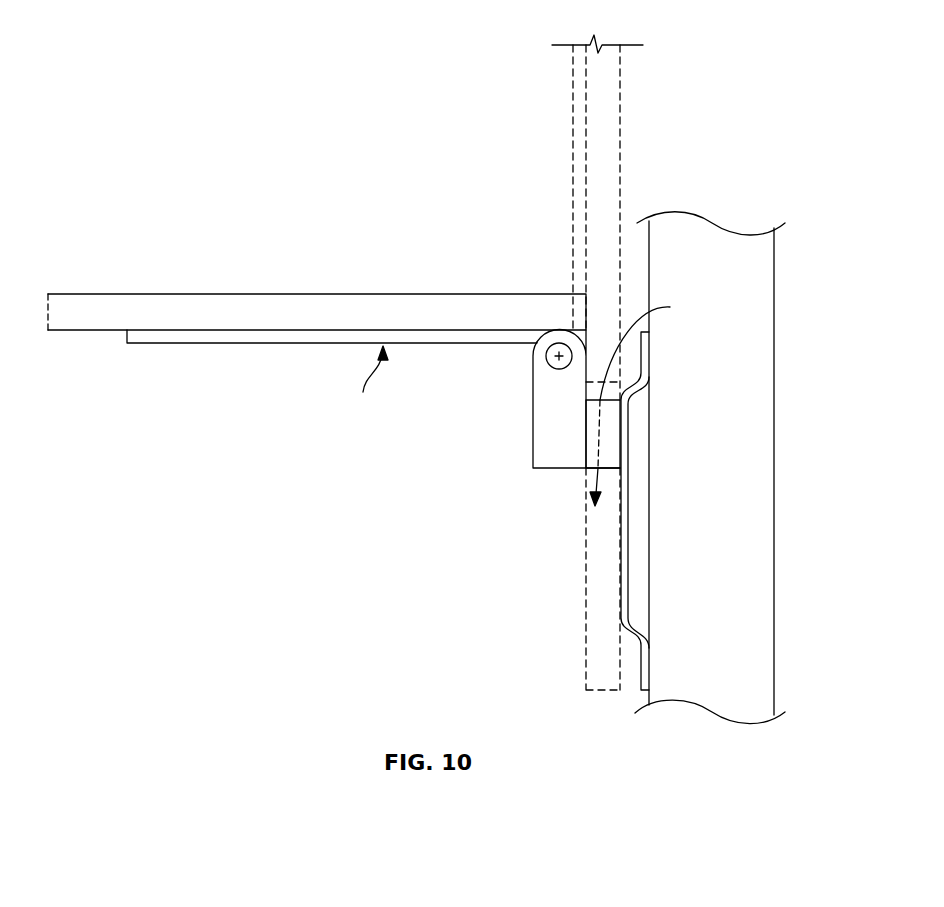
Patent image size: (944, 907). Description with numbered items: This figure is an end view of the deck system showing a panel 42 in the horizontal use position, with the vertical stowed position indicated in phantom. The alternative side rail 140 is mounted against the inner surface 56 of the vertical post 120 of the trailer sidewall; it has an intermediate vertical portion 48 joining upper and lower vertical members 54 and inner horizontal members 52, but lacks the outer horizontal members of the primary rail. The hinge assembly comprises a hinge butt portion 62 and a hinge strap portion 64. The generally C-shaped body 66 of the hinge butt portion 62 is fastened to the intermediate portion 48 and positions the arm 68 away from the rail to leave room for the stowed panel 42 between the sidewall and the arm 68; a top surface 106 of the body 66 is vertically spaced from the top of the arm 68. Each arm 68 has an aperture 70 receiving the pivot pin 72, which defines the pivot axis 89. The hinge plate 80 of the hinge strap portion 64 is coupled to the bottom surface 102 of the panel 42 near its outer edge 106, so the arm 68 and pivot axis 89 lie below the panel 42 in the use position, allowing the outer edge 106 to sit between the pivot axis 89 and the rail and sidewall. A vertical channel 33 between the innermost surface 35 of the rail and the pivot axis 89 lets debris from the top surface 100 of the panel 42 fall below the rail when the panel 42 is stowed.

The panel 42 is at (608, 135).
The inner surface 56 is at (649, 256).
The vertical post 120 is at (766, 293).
The top surface 100 is at (93, 293).
The bottom surface 102 is at (83, 332).
The hinge plate 80 is at (173, 337).
The hinge strap portion 64 is at (369, 385).
The arm 68 is at (540, 413).
The pivot pin 72 is at (558, 343).
The pivot axis 89 is at (550, 352).
The aperture 70 is at (550, 362).
The hinge butt portion 62 is at (523, 462).
The outer edge 106 is at (586, 318).
The vertical channel 33 is at (645, 401).
The body 66 is at (610, 442).
The side rail 140 is at (606, 608).
The vertical member 54 is at (645, 350).
The inner horizontal member 52 is at (630, 388).
The innermost surface 35 is at (621, 511).
The intermediate vertical portion 48 is at (621, 548).